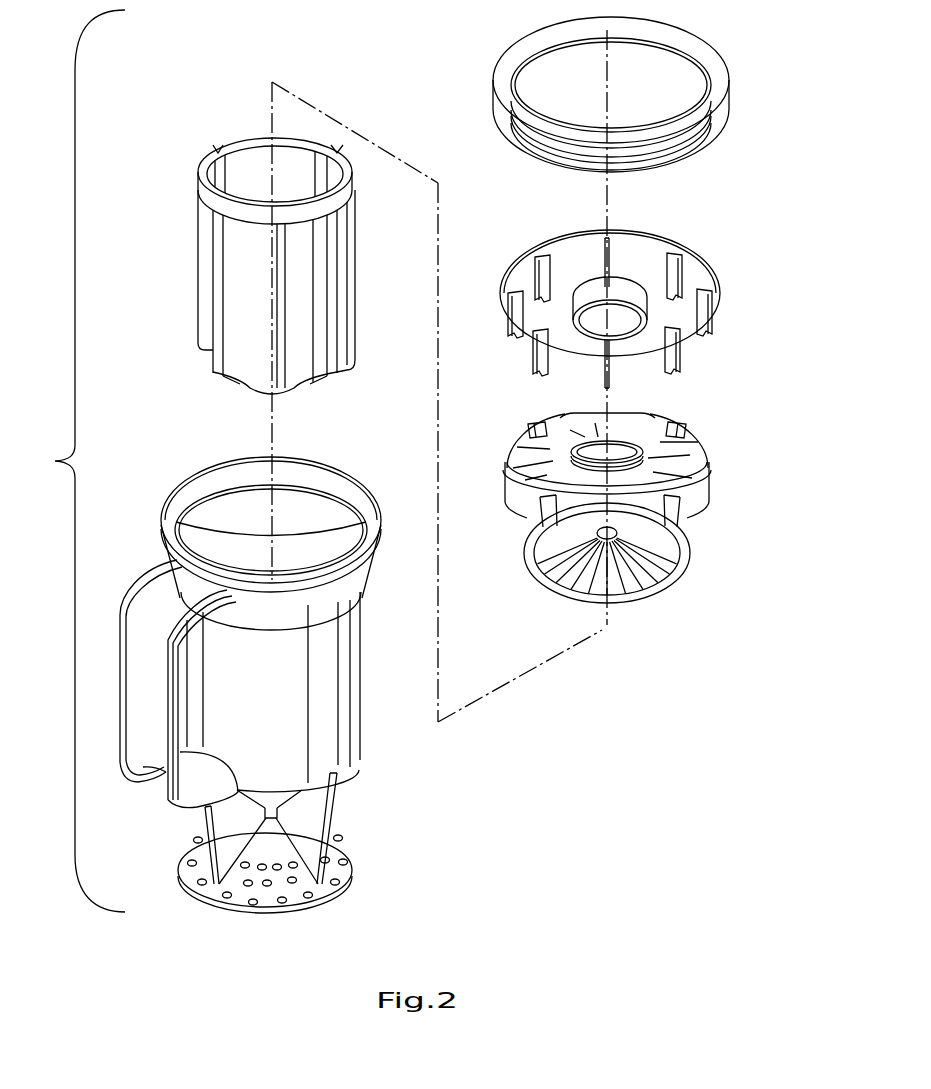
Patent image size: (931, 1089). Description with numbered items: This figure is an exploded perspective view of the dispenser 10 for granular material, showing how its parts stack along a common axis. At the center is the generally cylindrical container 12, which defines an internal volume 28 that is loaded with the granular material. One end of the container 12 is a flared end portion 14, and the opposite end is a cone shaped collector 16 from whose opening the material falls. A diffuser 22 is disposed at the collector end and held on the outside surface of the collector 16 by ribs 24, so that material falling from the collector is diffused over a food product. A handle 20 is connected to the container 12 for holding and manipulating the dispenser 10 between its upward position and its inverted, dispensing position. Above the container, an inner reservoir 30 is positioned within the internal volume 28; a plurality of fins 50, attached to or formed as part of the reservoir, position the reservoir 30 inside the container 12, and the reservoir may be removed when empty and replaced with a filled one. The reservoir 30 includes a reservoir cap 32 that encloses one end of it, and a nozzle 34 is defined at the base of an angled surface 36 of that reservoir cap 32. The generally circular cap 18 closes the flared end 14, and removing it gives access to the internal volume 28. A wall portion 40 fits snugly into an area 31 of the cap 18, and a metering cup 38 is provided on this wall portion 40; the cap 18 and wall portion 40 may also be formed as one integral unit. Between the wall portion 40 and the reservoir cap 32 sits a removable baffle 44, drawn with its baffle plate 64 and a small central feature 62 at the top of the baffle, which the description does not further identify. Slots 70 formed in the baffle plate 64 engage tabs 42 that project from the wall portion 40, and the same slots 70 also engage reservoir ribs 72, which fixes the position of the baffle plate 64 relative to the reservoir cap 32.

The dispenser 10 is at (55, 461).
The container 12 is at (332, 742).
The flared end portion 14 is at (342, 600).
The cone shaped collector 16 is at (280, 800).
The cap 18 is at (685, 41).
The handle 20 is at (153, 590).
The diffuser 22 is at (345, 878).
The ribs 24 is at (312, 822).
The internal volume 28 is at (310, 552).
The inner reservoir 30 is at (244, 135).
The area 31 is at (672, 99).
The reservoir cap 32 is at (699, 508).
The nozzle 34 is at (643, 566).
The angled surface 36 is at (633, 585).
The metering cup 38 is at (630, 290).
The wall portion 40 is at (700, 270).
The tabs 42 is at (688, 352).
The baffle 44 is at (640, 522).
The fins 50 is at (332, 331).
The top cap 62 is at (613, 413).
The baffle plate 64 is at (694, 457).
The slots 70 is at (528, 430).
The reservoir ribs 72 is at (680, 528).